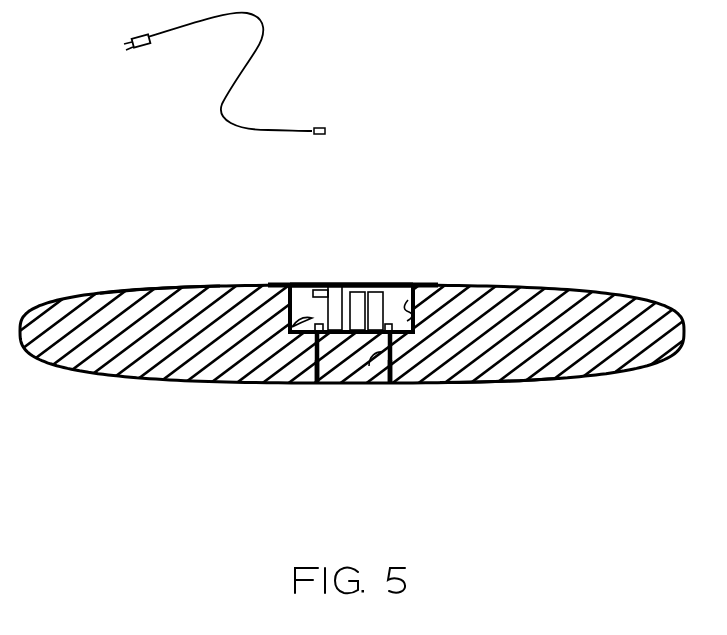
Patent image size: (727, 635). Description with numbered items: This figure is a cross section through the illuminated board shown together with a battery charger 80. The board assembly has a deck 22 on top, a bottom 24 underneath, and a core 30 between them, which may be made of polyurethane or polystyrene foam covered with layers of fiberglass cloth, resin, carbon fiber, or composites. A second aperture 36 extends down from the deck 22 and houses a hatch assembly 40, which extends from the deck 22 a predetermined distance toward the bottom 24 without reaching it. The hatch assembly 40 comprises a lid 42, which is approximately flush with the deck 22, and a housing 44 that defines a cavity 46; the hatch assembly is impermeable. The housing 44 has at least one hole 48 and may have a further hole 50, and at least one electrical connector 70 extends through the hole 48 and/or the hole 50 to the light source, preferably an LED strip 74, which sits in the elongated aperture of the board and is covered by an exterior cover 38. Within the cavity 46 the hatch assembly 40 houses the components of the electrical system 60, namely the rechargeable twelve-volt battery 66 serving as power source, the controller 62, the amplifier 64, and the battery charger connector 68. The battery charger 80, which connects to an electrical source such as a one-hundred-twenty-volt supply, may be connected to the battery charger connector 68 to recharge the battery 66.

The deck 22 is at (510, 284).
The bottom 24 is at (498, 385).
The core 30 is at (566, 296).
The second aperture 36 is at (268, 283).
The exterior cover 38 is at (152, 283).
The hatch assembly 40 is at (292, 281).
The lid 42 is at (310, 282).
The housing 44 is at (300, 326).
The cavity 46 is at (414, 298).
The hole 48 is at (322, 336).
The hole 50 is at (392, 336).
The electrical system 60 is at (412, 292).
The controller 62 is at (388, 301).
The amplifier 64 is at (368, 283).
The battery 66 is at (345, 283).
The battery charger connector 68 is at (322, 288).
The electrical connector 70 is at (316, 365).
The LED strip 74 is at (318, 386).
The battery charger 80 is at (290, 109).